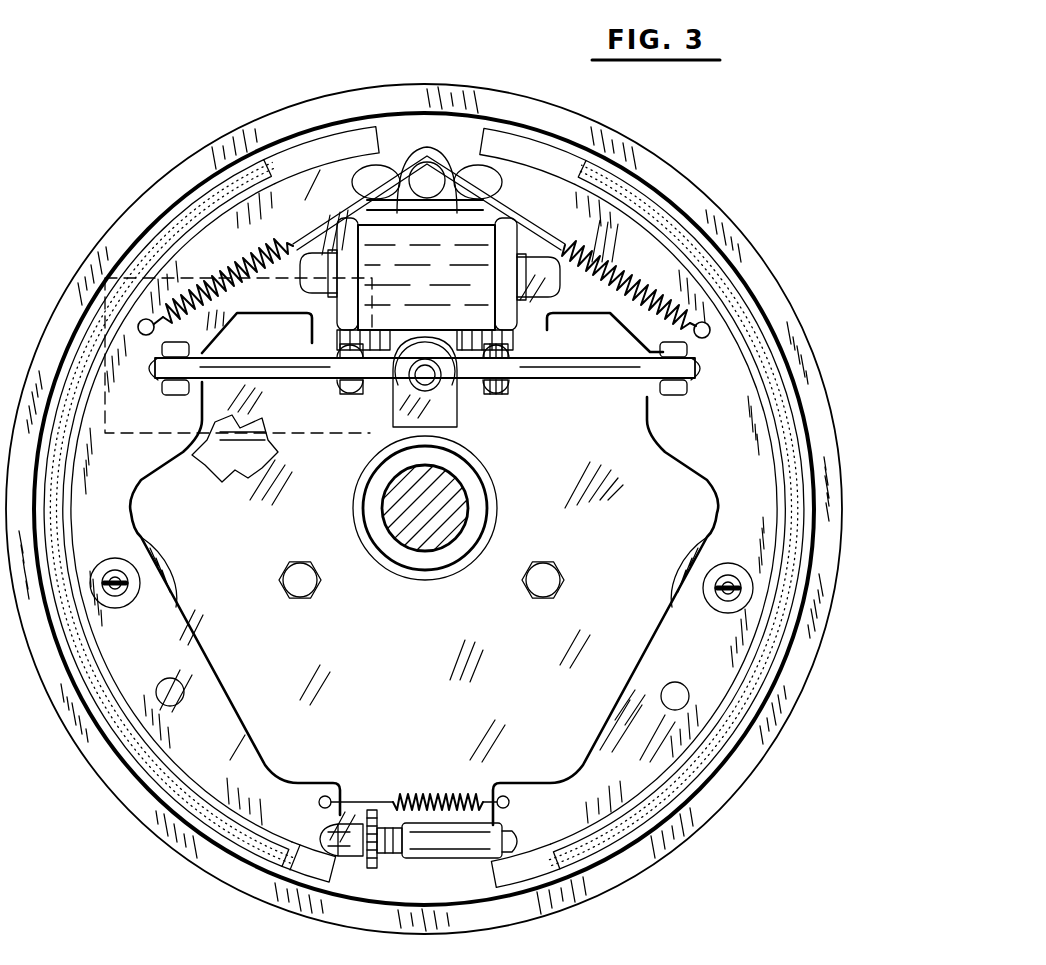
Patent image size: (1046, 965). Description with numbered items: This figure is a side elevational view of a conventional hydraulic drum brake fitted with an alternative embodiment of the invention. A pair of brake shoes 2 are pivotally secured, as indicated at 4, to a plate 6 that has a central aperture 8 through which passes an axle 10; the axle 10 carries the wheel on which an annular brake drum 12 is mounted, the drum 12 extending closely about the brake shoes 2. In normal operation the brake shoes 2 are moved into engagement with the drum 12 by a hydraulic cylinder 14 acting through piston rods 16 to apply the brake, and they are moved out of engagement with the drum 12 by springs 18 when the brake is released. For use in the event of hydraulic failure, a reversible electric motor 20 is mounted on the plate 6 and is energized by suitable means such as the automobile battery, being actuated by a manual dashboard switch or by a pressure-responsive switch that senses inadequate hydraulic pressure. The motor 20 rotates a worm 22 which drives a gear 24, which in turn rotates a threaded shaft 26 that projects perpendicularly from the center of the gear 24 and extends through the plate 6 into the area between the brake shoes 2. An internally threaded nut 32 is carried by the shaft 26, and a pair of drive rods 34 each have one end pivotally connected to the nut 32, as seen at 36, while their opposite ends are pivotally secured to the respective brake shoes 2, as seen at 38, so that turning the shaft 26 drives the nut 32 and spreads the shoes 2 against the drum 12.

The brake shoes 2 is at (183, 222).
The pivotal securement 4 is at (322, 830).
The plate 6 is at (523, 676).
The central aperture 8 is at (458, 552).
The axle 10 is at (395, 538).
The brake drum 12 is at (326, 97).
The hydraulic cylinder 14 is at (446, 265).
The piston rods 16 is at (300, 288).
The springs 18 is at (222, 255).
The reversible electric motor 20 is at (262, 448).
The worm 22 is at (455, 425).
The gear 24 is at (448, 325).
The threaded shaft 26 is at (470, 400).
The internally threaded nut 32 is at (515, 351).
The drive rods 34 is at (250, 364).
The pivotal connection 36 is at (345, 395).
The pivotal securement 38 is at (175, 396).